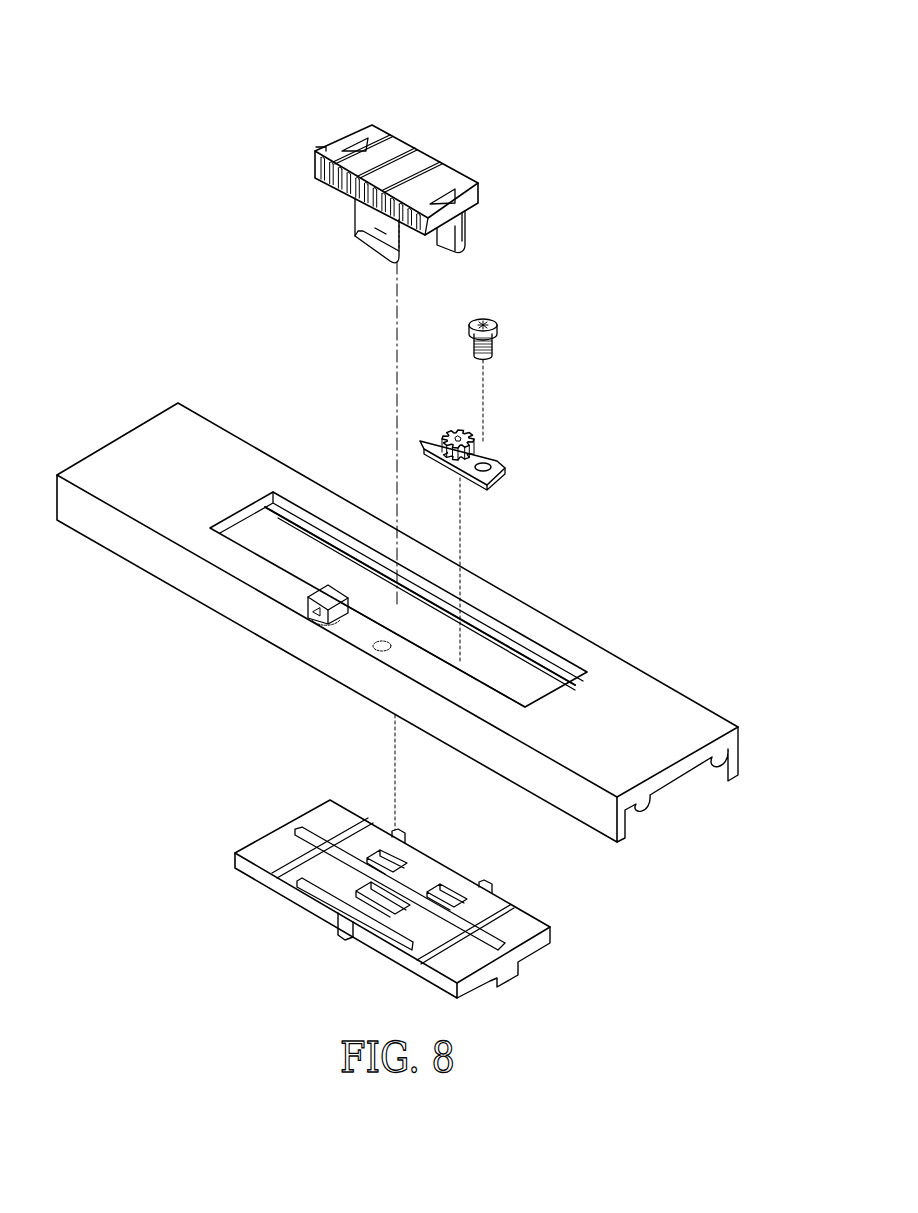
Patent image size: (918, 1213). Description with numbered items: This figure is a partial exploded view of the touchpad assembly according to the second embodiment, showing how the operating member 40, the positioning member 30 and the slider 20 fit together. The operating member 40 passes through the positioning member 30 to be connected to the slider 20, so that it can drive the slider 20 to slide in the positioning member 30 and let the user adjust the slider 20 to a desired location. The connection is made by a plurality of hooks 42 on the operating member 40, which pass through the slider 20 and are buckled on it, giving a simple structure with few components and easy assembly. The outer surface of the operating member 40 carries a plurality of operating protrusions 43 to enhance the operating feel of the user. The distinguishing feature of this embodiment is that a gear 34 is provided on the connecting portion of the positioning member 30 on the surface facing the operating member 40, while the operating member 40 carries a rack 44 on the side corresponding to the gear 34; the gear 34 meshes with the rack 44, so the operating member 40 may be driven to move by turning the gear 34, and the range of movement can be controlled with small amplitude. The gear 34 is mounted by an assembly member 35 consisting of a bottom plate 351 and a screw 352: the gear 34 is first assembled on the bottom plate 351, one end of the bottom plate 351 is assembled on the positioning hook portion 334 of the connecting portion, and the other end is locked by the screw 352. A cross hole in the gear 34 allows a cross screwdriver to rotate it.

The slider 20 is at (527, 928).
The positioning member 30 is at (397, 622).
The positioning hook portion 334 is at (305, 620).
The gear 34 is at (457, 427).
The assembly member 35 is at (516, 404).
The bottom plate 351 is at (494, 463).
The screw 352 is at (494, 351).
The operating member 40 is at (414, 160).
The hooks 42 is at (369, 258).
The operating protrusions 43 is at (380, 128).
The rack 44 is at (318, 186).